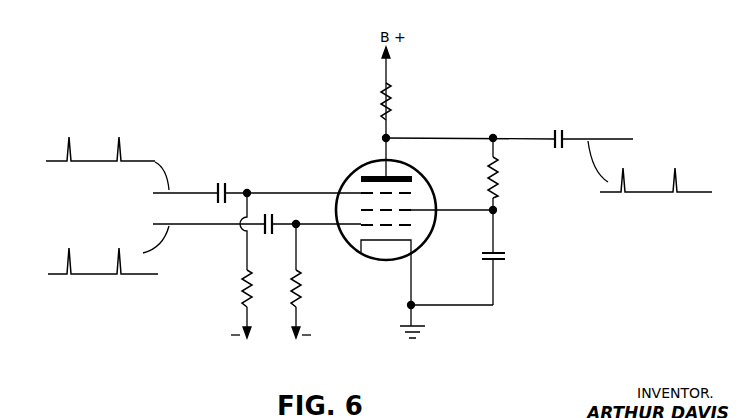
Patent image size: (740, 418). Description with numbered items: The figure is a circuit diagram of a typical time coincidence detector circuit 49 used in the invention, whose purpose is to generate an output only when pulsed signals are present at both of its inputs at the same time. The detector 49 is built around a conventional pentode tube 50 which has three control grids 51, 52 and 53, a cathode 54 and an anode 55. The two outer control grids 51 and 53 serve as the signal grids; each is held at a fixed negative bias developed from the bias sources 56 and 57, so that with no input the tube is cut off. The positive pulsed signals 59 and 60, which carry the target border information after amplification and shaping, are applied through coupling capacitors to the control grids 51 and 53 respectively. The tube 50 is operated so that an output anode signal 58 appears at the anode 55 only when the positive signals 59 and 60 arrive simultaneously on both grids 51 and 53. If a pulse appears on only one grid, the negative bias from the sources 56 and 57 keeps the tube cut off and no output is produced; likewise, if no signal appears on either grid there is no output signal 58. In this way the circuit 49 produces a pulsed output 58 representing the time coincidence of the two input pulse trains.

The time coincidence detector circuit 49 is at (360, 149).
The pentode tube 50 is at (353, 170).
The control grid 51 is at (412, 223).
The control grid 52 is at (362, 206).
The control grid 53 is at (410, 192).
The cathode 54 is at (363, 238).
The anode 55 is at (400, 175).
The bias source 56 is at (250, 343).
The bias source 57 is at (297, 344).
The output anode signal 58 is at (677, 177).
The positive signal 59 is at (67, 146).
The positive signal 60 is at (67, 257).